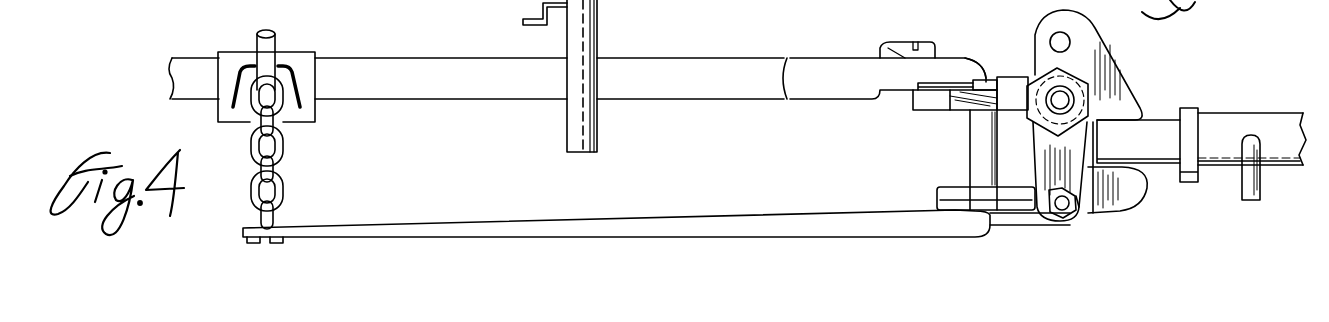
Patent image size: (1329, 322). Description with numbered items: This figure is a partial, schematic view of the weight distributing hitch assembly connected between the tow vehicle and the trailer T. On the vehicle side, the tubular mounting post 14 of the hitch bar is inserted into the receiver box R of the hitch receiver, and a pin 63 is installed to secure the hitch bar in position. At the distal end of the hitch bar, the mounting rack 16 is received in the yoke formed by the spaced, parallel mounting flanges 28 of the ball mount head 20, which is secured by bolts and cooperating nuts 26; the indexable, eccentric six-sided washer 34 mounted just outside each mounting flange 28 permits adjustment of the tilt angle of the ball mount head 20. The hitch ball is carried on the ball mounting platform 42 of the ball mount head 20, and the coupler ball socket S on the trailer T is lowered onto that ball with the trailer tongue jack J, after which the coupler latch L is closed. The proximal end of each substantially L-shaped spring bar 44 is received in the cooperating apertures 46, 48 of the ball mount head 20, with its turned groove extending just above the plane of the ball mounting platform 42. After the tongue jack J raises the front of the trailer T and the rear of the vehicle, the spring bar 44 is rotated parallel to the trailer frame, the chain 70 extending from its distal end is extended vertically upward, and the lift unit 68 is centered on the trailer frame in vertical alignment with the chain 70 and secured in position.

The trailer T is at (725, 57).
The lift unit 68 is at (290, 52).
The chain 70 is at (285, 150).
The trailer tongue jack J is at (597, 18).
The coupler latch L is at (917, 42).
The coupler ball socket S is at (963, 70).
The ball mounting platform 42 is at (913, 100).
The aperture 48 is at (968, 110).
The aperture 46 is at (968, 187).
The spring bar 44 is at (520, 222).
The ball mount head 20 is at (1048, 233).
The nut 26 is at (1045, 85).
The mounting rack 16 is at (1110, 42).
The indexable eccentric six-sided washer 34 is at (1118, 72).
The tubular mounting post 14 is at (1220, 160).
The receiver box R is at (1192, 110).
The pin 63 is at (1252, 200).
The mounting flange 28 is at (1075, 213).